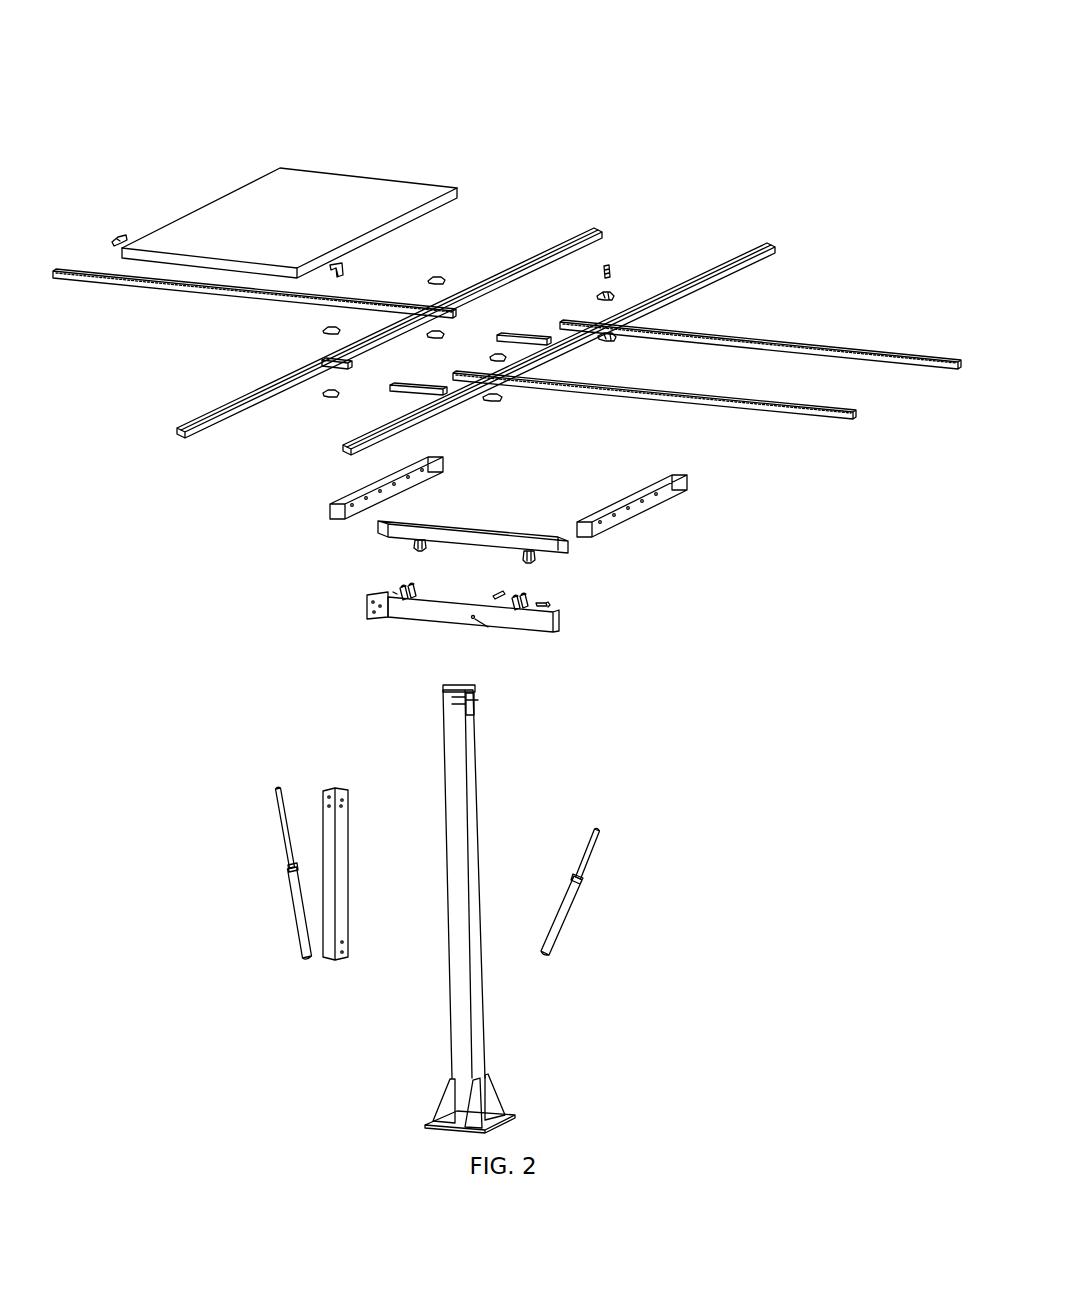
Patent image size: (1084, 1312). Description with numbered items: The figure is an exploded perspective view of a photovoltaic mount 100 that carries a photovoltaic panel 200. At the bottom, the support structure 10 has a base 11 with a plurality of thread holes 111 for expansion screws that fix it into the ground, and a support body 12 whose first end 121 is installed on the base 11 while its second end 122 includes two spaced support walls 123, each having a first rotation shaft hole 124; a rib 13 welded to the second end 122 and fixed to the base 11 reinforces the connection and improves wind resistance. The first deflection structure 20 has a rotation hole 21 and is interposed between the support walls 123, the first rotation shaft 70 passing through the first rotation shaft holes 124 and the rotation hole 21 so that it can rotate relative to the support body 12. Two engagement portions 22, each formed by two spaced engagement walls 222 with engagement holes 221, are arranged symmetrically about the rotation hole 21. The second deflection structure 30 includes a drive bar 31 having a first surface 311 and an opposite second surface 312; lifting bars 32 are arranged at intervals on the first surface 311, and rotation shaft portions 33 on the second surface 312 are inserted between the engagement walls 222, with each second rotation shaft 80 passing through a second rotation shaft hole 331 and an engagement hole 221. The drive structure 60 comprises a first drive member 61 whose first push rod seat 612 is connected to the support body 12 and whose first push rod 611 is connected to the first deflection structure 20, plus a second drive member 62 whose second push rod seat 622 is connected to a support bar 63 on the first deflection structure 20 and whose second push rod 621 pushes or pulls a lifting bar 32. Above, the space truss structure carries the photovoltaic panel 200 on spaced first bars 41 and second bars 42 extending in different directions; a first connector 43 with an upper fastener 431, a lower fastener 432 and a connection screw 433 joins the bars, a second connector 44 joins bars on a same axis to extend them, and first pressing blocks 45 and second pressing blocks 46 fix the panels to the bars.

The photovoltaic mount 100 is at (503, 25).
The photovoltaic panel 200 is at (310, 197).
The first pressing block 45 is at (120, 236).
The second pressing block 46 is at (345, 263).
The second connector 44 is at (522, 333).
The first connector 43 is at (625, 230).
The connection screw 433 is at (605, 264).
The upper fastener 431 is at (610, 292).
The lower fastener 432 is at (640, 320).
The second bar 42 is at (737, 247).
The first bar 41 is at (883, 361).
The second deflection structure 30 is at (469, 603).
The lifting bar 32 is at (331, 509).
The drive bar 31 is at (390, 530).
The first surface 311 is at (528, 530).
The second surface 312 is at (556, 550).
The rotation shaft portion 33 is at (417, 544).
The second rotation shaft hole 331 is at (423, 558).
The first deflection structure 20 is at (458, 659).
The engagement portion 22 is at (480, 645).
The rotation hole 21 is at (475, 617).
The engagement hole 221 is at (405, 600).
The engagement wall 222 is at (405, 598).
The first rotation shaft 70 is at (505, 592).
The second rotation shaft 80 is at (397, 593).
The support structure 10 is at (576, 914).
The support body 12 is at (626, 880).
The first end 121 is at (496, 1023).
The second end 122 is at (486, 749).
The support wall 123 is at (478, 700).
The first rotation shaft hole 124 is at (478, 690).
The rib 13 is at (487, 1099).
The base 11 is at (491, 1111).
The thread hole 111 is at (430, 1118).
The drive structure 60 is at (444, 873).
The second drive member 62 is at (188, 873).
The second push rod 621 is at (288, 853).
The second push rod seat 622 is at (292, 887).
The support bar 63 is at (328, 925).
The first drive member 61 is at (674, 891).
The first push rod 611 is at (588, 868).
The first push rod seat 612 is at (565, 904).